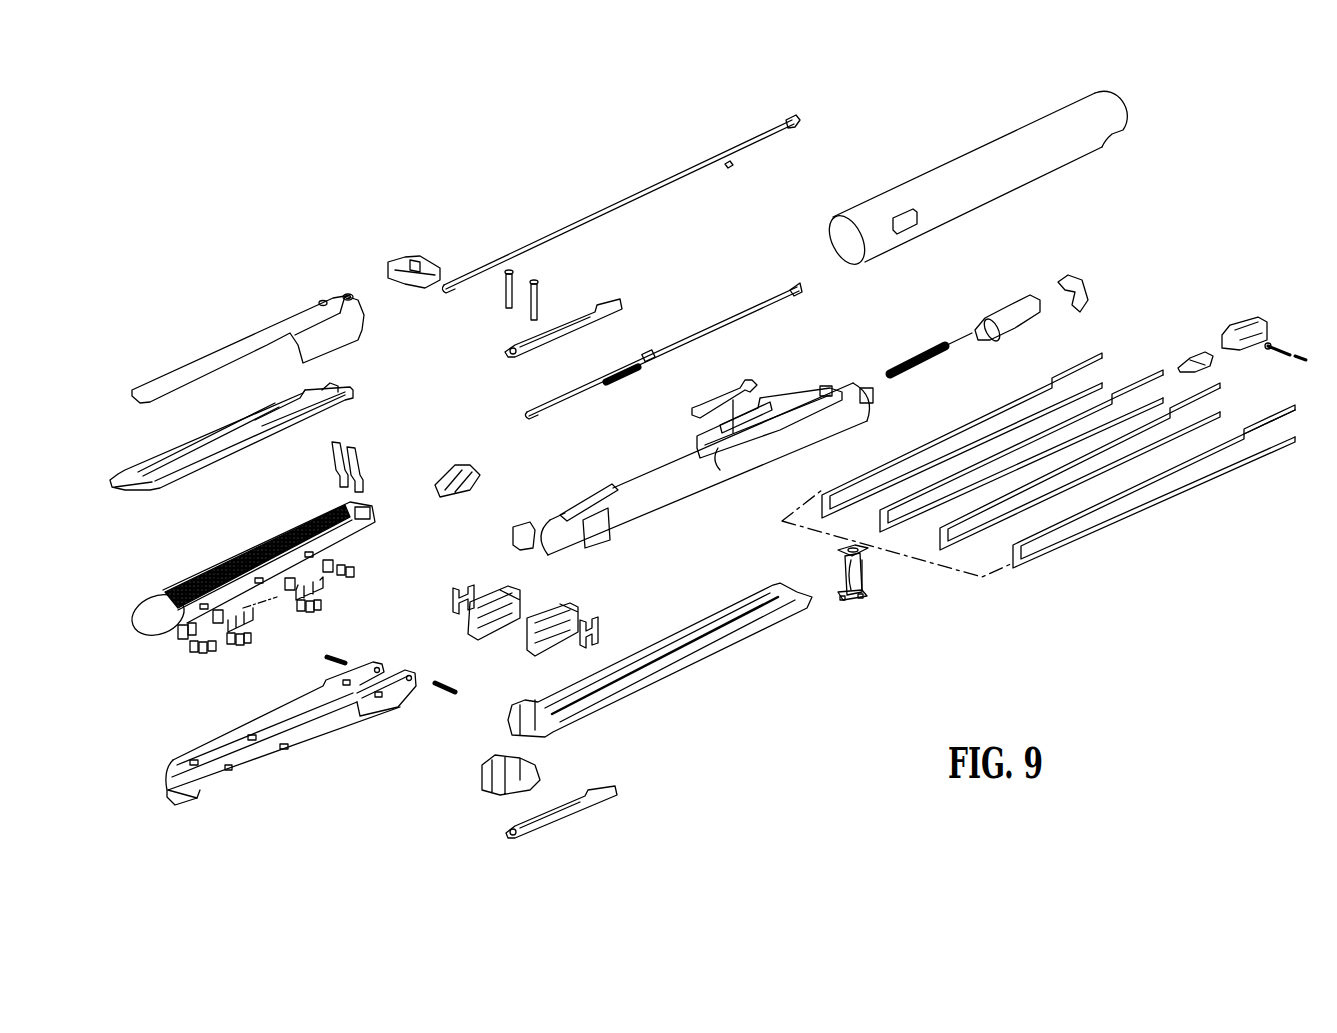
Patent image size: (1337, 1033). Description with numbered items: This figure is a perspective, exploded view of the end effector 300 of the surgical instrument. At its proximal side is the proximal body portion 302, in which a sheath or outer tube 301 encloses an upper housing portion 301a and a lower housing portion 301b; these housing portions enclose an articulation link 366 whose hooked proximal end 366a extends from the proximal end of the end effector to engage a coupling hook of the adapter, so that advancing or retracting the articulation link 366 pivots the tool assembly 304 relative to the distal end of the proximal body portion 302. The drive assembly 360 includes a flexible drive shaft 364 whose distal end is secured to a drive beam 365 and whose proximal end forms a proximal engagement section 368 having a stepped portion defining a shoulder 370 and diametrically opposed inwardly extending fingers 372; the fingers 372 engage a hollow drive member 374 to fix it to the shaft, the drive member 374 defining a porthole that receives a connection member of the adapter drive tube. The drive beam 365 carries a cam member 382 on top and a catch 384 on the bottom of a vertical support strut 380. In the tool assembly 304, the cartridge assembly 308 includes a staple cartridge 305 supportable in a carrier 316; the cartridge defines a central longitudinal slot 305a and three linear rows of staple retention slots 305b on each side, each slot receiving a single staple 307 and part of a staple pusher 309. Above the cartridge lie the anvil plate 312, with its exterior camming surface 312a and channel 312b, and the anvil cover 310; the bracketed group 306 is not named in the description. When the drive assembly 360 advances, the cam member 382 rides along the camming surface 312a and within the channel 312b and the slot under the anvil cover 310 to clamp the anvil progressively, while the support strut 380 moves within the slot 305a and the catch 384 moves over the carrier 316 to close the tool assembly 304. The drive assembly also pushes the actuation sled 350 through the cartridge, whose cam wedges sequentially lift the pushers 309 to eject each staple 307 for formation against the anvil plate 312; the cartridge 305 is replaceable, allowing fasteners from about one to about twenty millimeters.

The end effector 300 is at (314, 185).
The outer tube 301 is at (947, 172).
The upper housing portion 301a is at (647, 475).
The lower housing portion 301b is at (667, 667).
The proximal body portion 302 is at (728, 102).
The tool assembly 304 is at (128, 352).
The staple cartridge 305 is at (163, 575).
The central longitudinal slot 305a is at (245, 550).
The staple retention slots 305b is at (287, 525).
The anvil assembly 306 is at (360, 277).
The staple 307 is at (325, 589).
The cartridge assembly 308 is at (380, 447).
The staple pusher 309 is at (302, 613).
The anvil cover 310 is at (190, 358).
The anvil plate 312 is at (205, 455).
The exterior camming surface 312a is at (150, 455).
The channel 312b is at (295, 400).
The carrier 316 is at (297, 748).
The actuation sled 350 is at (478, 484).
The drive assembly 360 is at (1019, 566).
The flexible drive shaft 364 is at (1136, 523).
The drive beam 365 is at (865, 575).
The articulation link 366 is at (640, 198).
The hooked proximal end 366a is at (792, 130).
The proximal engagement section 368 is at (1287, 442).
The shoulder 370 is at (1262, 440).
The fingers 372 is at (1108, 355).
The hollow drive member 374 is at (1261, 320).
The vertical support strut 380 is at (845, 585).
The cam member 382 is at (838, 548).
The catch 384 is at (860, 600).